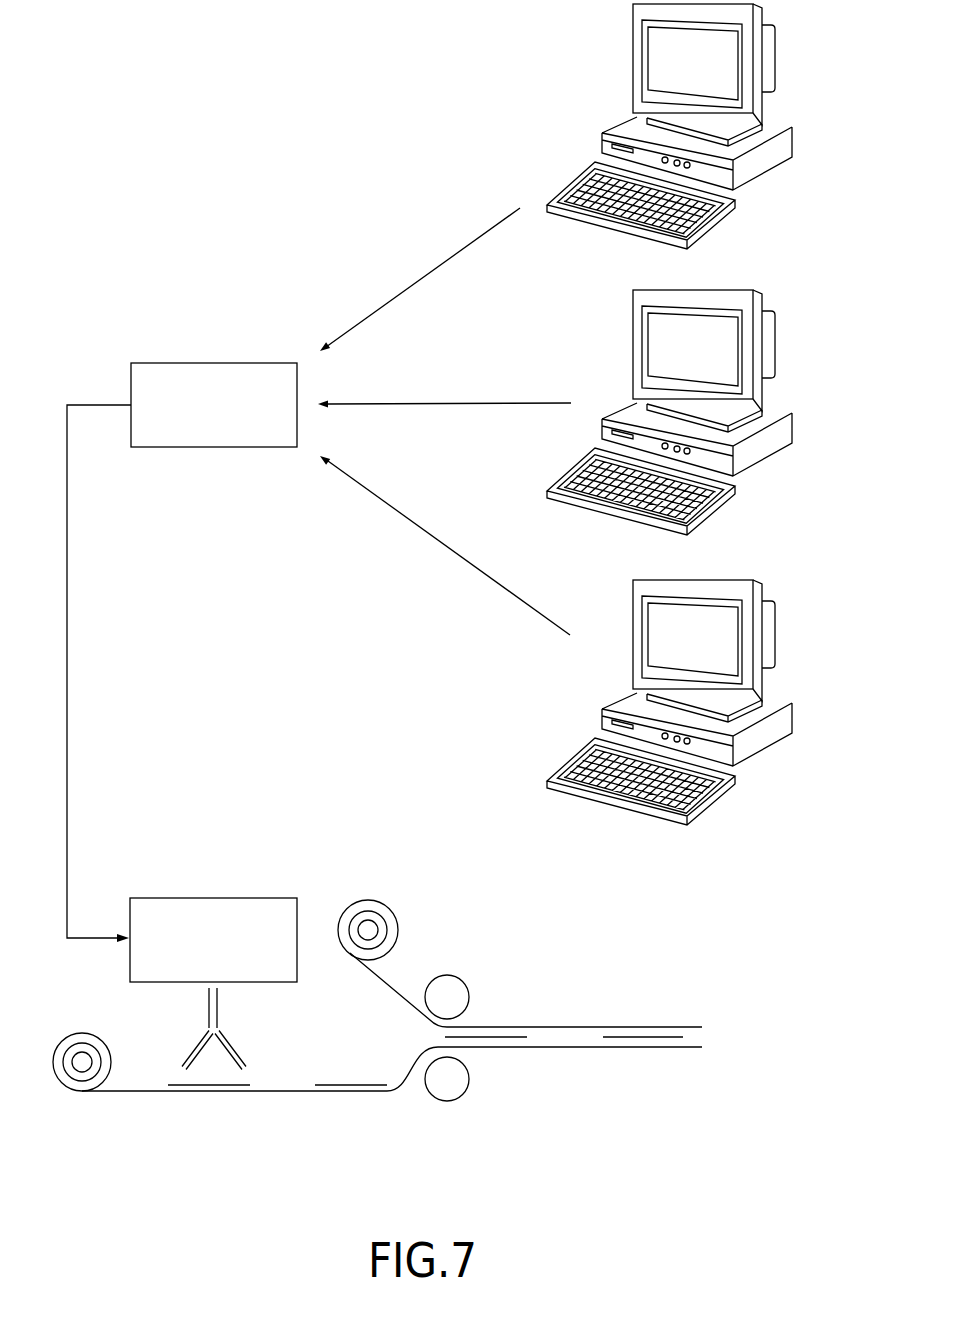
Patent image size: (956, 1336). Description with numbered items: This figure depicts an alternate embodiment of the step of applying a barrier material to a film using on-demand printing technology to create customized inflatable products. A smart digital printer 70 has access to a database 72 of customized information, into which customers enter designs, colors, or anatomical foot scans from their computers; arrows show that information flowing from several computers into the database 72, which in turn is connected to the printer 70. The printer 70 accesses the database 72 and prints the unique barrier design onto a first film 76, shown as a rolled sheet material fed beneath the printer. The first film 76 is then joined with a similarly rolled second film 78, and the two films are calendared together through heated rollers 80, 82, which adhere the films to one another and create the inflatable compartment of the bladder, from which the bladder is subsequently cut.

The digital printer 70 is at (220, 897).
The database 72 is at (220, 362).
The first film 76 is at (147, 1093).
The second film 78 is at (388, 970).
The heated roller 80 is at (470, 988).
The heated roller 82 is at (467, 1089).